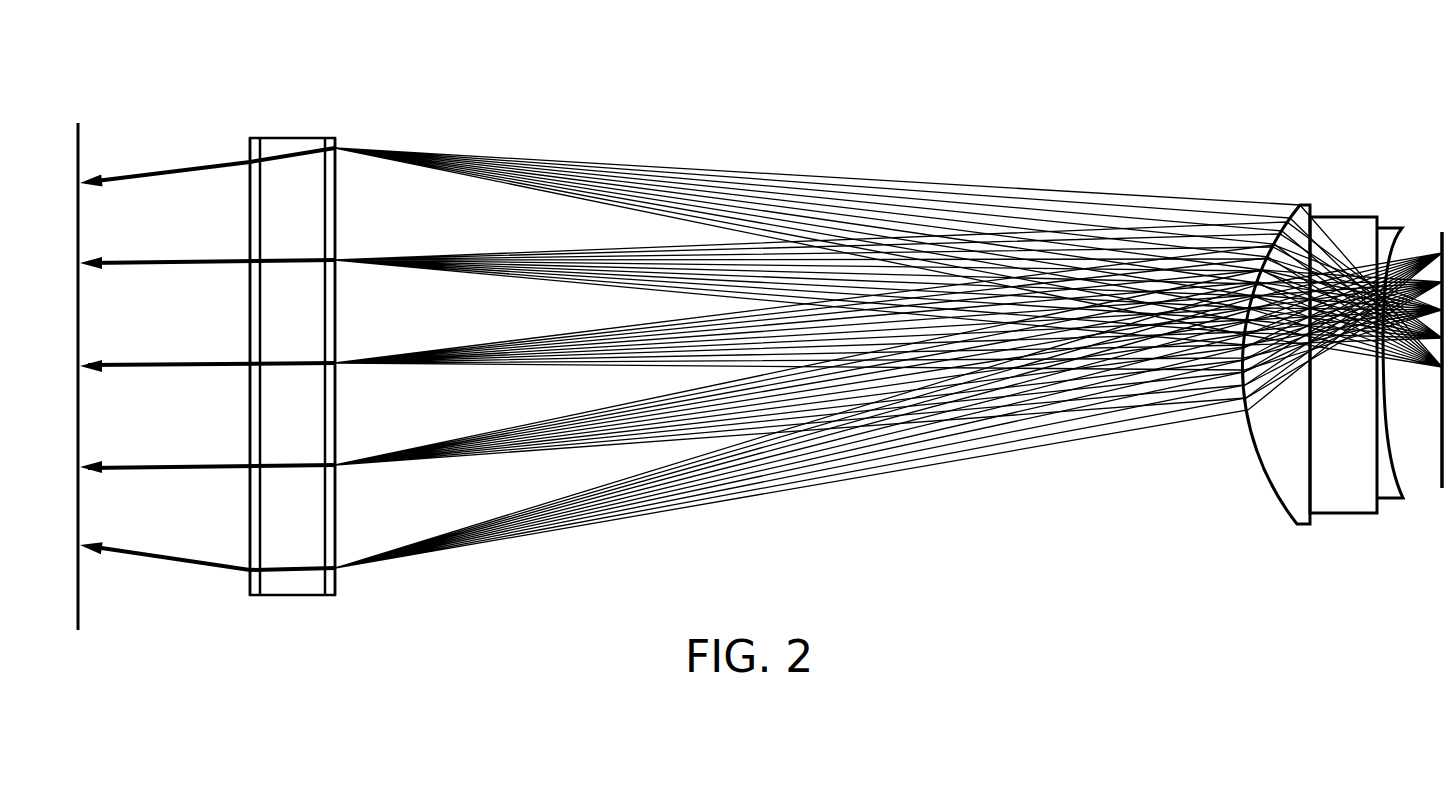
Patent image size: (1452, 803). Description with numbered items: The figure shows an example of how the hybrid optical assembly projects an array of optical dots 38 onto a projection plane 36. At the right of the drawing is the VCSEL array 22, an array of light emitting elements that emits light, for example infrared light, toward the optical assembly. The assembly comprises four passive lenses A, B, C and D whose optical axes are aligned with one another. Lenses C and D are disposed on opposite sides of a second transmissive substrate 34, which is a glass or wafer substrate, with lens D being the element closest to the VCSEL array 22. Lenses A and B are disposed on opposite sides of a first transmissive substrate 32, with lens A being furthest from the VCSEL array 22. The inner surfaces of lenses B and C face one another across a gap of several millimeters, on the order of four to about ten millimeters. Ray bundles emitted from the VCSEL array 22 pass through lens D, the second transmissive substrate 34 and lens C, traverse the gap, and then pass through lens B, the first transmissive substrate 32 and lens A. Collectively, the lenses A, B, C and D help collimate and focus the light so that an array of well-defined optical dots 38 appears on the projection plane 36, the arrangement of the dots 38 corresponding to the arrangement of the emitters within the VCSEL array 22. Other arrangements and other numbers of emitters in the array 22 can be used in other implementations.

The VCSEL array 22 is at (1440, 488).
The first transmissive substrate 32 is at (302, 595).
The second transmissive substrate 34 is at (1349, 513).
The projection plane 36 is at (79, 182).
The array of optical dots 38 is at (80, 262).
The lens A is at (248, 192).
The lens B is at (336, 184).
The lens C is at (1260, 473).
The lens D is at (1400, 498).